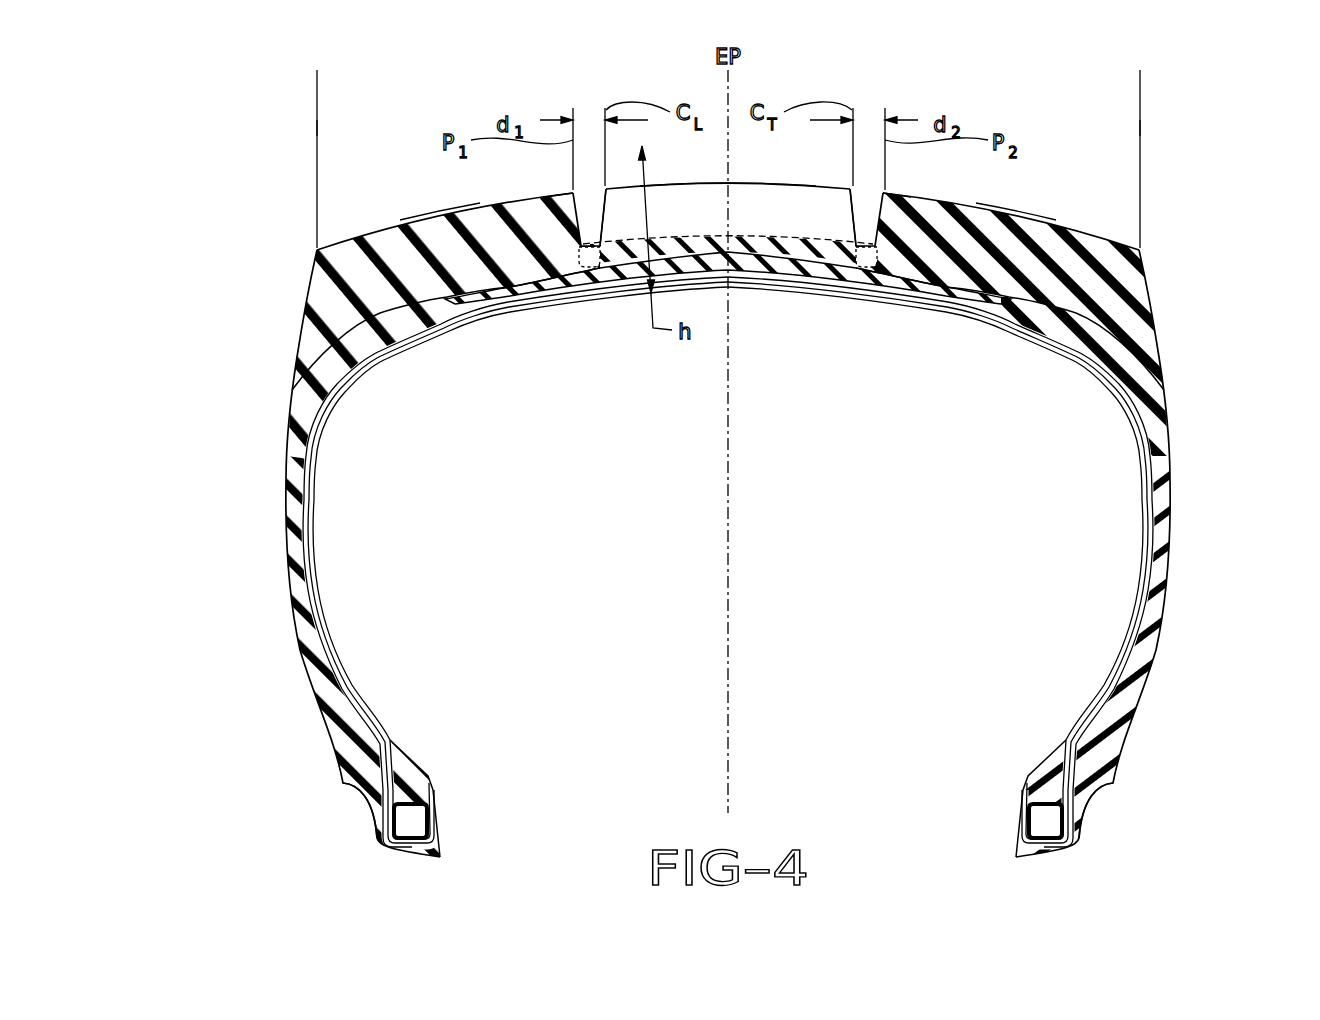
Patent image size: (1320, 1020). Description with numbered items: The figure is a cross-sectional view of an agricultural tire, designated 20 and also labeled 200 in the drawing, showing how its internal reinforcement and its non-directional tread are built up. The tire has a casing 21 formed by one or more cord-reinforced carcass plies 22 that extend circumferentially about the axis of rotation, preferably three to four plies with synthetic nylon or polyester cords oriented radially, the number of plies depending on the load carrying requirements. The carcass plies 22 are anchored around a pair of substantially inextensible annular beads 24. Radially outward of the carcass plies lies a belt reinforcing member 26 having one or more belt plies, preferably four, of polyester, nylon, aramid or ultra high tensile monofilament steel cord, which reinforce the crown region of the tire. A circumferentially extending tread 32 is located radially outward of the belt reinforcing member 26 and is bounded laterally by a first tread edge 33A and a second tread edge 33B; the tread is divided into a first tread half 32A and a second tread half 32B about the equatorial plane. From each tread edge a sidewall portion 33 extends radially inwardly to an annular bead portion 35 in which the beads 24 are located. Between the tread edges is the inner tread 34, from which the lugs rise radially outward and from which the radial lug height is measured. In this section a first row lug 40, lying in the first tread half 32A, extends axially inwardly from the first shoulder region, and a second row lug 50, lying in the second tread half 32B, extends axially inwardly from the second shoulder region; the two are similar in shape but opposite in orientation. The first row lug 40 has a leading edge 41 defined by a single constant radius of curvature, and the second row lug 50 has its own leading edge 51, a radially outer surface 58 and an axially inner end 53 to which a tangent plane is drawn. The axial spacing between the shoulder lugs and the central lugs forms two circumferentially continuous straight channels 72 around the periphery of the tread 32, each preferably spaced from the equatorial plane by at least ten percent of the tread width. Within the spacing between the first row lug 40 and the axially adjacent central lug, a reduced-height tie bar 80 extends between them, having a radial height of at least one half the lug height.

The tire 20 is at (722, 497).
The tire 200 is at (722, 497).
The casing 21 is at (1172, 506).
The carcass plies 22 is at (333, 637).
The annular beads 24 is at (407, 822).
The belt reinforcing member 26 is at (463, 325).
The tread 32 is at (1145, 287).
The first tread half 32A is at (728, 83).
The second tread half 32B is at (728, 83).
The sidewall portion 33 is at (290, 625).
The first tread edge 33A is at (317, 128).
The second tread edge 33B is at (1140, 128).
The inner tread 34 is at (847, 222).
The bead portion 35 is at (343, 783).
The first row lug 40 is at (370, 237).
The leading edge 41 is at (573, 193).
The second row lug 50 is at (710, 182).
The leading edge 51 is at (604, 188).
The axially inner end 53 is at (855, 225).
The outer surface 58 is at (412, 222).
The circumferentially continuous straight channel 72 is at (590, 208).
The tie bar 80 is at (598, 268).